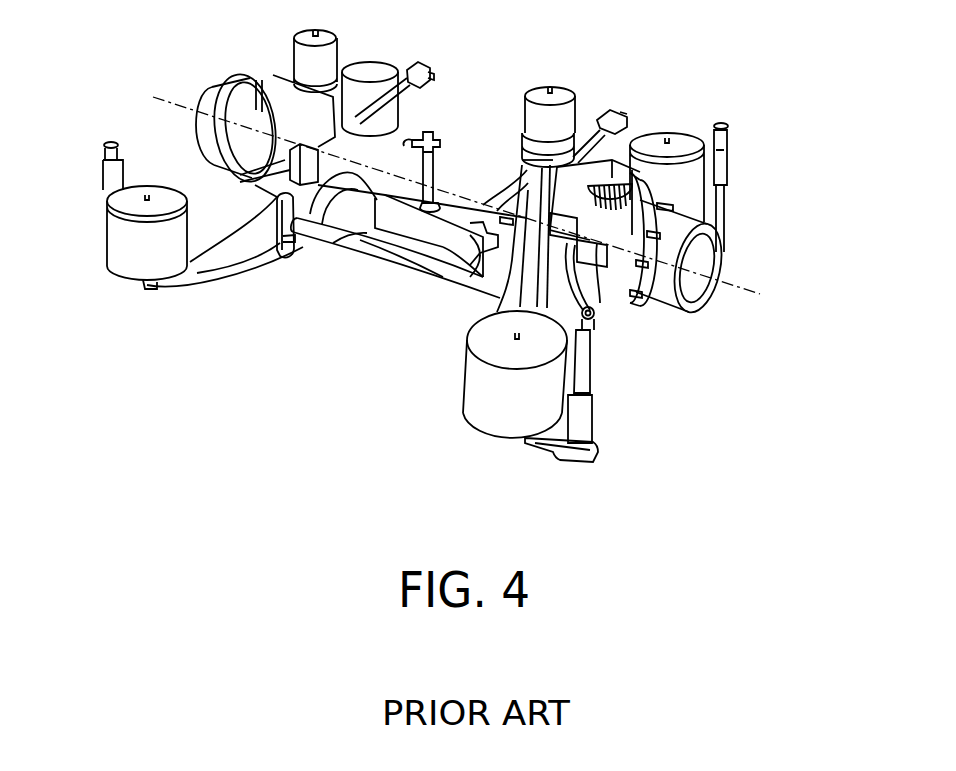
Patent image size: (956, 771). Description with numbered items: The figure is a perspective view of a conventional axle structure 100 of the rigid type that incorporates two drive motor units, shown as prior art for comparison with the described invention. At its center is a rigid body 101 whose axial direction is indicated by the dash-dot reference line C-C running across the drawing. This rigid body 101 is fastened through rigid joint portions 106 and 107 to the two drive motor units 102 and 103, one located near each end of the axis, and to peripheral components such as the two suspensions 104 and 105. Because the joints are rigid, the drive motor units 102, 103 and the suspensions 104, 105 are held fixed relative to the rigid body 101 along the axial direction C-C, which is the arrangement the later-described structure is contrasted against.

The axle structure 100 is at (714, 80).
The rigid body 101 is at (478, 122).
The drive motor unit 102 is at (223, 100).
The drive motor unit 103 is at (683, 231).
The suspension 104 is at (133, 267).
The suspension 105 is at (497, 413).
The rigid joint portion 106 is at (300, 245).
The rigid joint portion 107 is at (486, 301).